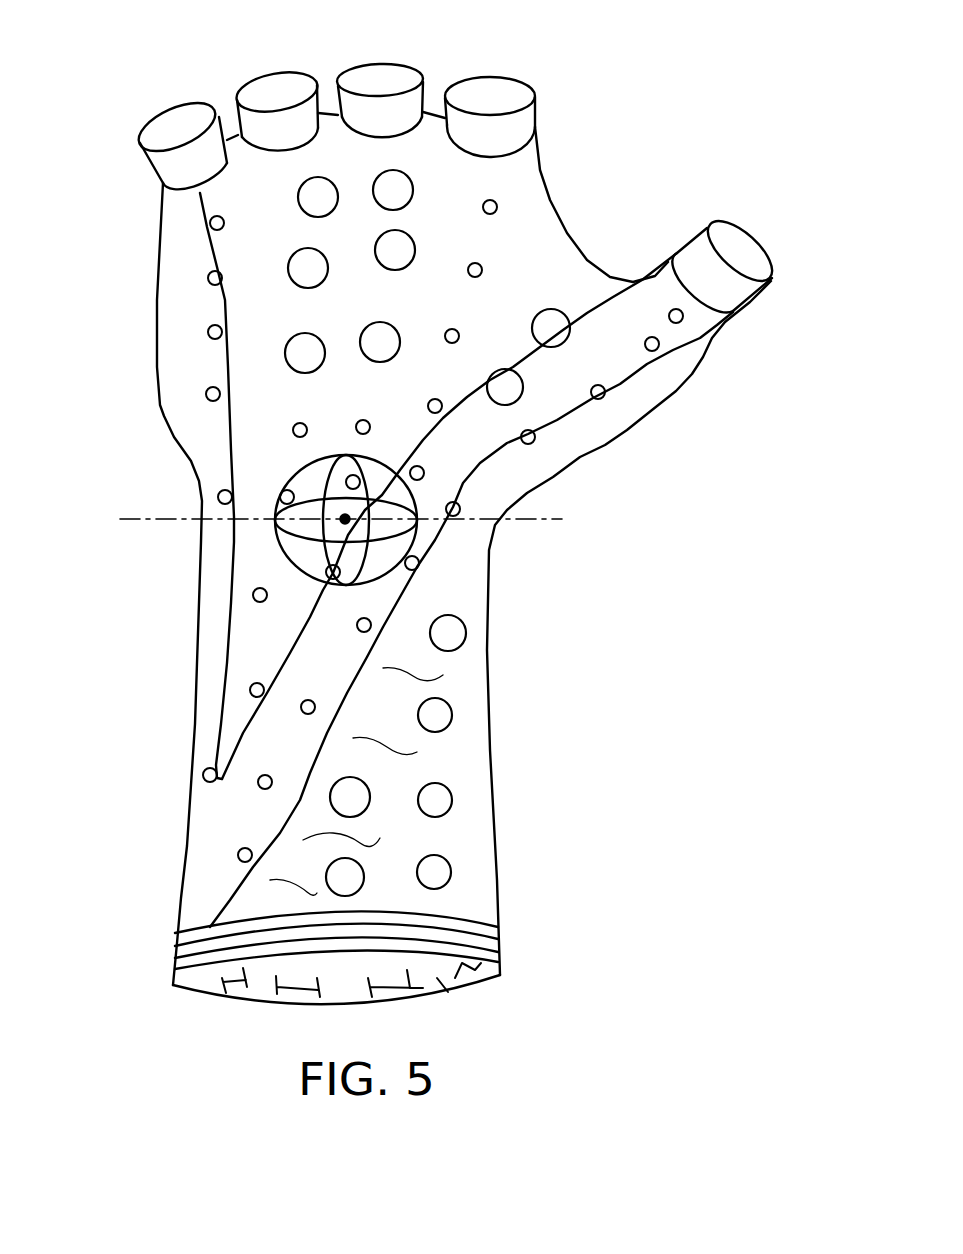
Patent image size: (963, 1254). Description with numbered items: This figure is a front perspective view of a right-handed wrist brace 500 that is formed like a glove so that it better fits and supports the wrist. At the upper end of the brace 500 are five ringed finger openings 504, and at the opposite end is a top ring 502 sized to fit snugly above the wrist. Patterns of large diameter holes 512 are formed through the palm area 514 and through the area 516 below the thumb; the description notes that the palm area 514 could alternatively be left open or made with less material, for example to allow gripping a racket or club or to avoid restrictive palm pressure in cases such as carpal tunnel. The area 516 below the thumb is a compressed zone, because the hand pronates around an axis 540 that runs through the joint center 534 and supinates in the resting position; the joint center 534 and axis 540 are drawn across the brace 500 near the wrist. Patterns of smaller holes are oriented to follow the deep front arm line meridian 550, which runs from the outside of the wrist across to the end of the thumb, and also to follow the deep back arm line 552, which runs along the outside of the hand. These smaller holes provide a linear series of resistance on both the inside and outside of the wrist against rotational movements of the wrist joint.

The brace 500 is at (404, 495).
The top ring 502 is at (503, 943).
The ringed finger openings 504 is at (163, 184).
The large diameter holes 512 is at (400, 252).
The palm area 514 is at (443, 198).
The area below the thumb 516 is at (453, 767).
The joint center 534 is at (380, 470).
The axis 540 is at (560, 520).
The deep front arm line meridian 550 is at (610, 362).
The deep back arm line 552 is at (197, 433).